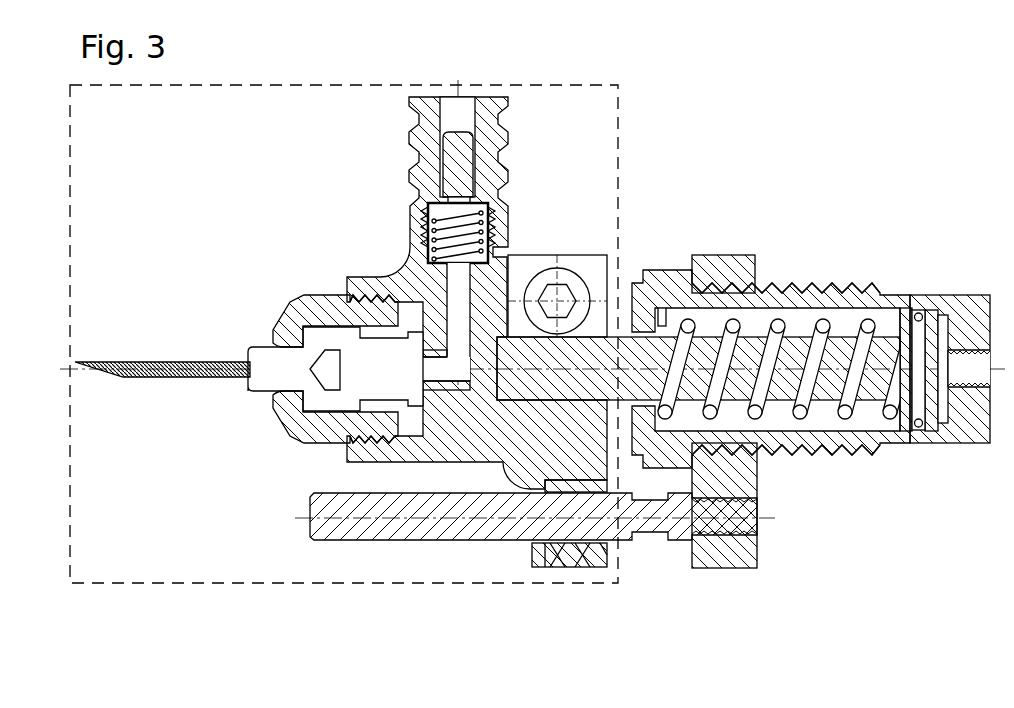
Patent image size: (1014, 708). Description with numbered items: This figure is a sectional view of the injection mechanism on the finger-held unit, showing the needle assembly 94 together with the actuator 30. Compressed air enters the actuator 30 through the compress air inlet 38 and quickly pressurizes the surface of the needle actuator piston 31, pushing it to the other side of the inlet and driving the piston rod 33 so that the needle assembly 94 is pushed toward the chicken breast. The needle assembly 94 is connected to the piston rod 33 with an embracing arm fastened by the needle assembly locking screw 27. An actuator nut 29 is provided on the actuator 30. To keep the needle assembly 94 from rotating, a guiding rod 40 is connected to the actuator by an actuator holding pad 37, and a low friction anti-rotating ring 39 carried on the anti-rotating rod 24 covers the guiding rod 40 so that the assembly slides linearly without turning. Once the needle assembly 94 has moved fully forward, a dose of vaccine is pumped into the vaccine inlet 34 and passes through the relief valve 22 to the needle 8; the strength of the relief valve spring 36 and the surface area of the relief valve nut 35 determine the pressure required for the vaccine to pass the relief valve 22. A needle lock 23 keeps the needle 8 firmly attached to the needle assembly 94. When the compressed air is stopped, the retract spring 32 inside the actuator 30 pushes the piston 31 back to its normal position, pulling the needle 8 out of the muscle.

The needle 8 is at (263, 384).
The relief valve 22 is at (412, 147).
The needle lock 23 is at (292, 318).
The anti-rotating rod 24 is at (545, 560).
The needle assembly locking screw 27 is at (568, 278).
The actuator nut 29 is at (784, 270).
The actuator 30 is at (856, 276).
The needle actuator piston 31 is at (932, 418).
The retract spring 32 is at (847, 416).
The piston rod 33 is at (594, 358).
The vaccine inlet 34 is at (452, 113).
The relief valve nut 35 is at (452, 199).
The relief valve spring 36 is at (432, 256).
The actuator holding pad 37 is at (721, 270).
The compress air inlet 38 is at (973, 363).
The anti-rotating ring 39 is at (580, 546).
The guiding rod 40 is at (320, 528).
The needle assembly 94 is at (200, 590).